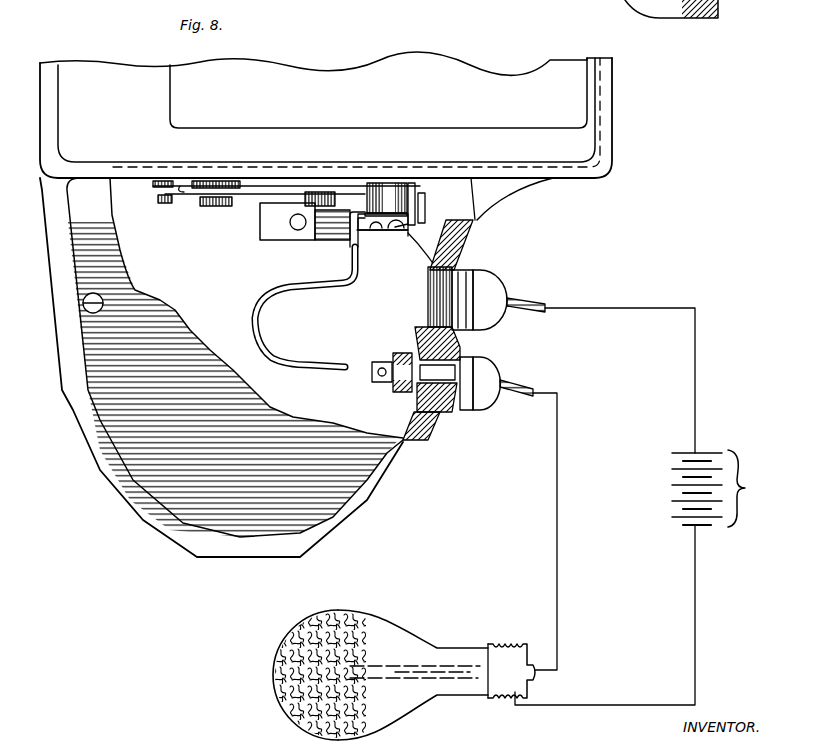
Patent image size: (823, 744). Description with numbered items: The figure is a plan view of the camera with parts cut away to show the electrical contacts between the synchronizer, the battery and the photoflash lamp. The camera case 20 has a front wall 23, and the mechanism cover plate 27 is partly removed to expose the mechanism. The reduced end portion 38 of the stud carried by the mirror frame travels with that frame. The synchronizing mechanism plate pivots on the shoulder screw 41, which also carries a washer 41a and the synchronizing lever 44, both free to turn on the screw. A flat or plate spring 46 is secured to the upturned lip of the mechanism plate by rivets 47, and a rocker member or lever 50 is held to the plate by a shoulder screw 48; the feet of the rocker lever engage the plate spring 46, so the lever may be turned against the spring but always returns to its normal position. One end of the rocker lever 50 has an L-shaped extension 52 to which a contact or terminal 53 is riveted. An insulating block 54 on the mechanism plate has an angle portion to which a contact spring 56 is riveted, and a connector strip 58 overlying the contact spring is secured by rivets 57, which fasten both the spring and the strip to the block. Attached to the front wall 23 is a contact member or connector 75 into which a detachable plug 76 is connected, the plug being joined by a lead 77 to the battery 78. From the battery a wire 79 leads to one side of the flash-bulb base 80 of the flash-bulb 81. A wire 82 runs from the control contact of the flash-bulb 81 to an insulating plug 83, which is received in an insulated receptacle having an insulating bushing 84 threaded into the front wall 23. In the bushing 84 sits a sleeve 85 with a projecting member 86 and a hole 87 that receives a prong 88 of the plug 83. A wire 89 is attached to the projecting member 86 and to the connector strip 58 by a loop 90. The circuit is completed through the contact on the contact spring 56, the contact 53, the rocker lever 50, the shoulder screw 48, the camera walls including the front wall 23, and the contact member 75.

The camera case 20 is at (577, 92).
The front wall 23 is at (463, 242).
The mechanism cover plate 27 is at (387, 453).
The reduced end portion 38 is at (167, 197).
The shoulder screw 41 is at (198, 203).
The washer 41a is at (180, 187).
The synchronizing lever 44 is at (248, 195).
The plate spring 46 is at (425, 190).
The rivets 47 is at (427, 205).
The shoulder screw 48 is at (388, 237).
The rocker member or lever 50 is at (307, 237).
The L-shaped extension 52 is at (262, 230).
The contact or terminal 53 is at (292, 226).
The insulating block 54 is at (438, 262).
The contact spring 56 is at (330, 232).
The rivets 57 is at (397, 228).
The connector strip 58 is at (404, 227).
The contact member or connector 75 is at (467, 268).
The detachable plug 76 is at (497, 288).
The conductor 77 is at (635, 308).
The battery 78 is at (720, 488).
The wire 79 is at (630, 703).
The flash-bulb base 80 is at (507, 656).
The flash-bulb 81 is at (362, 617).
The wire 82 is at (560, 447).
The insulating plug 83 is at (488, 373).
The insulating bushing 84 is at (458, 345).
The sleeve 85 is at (407, 355).
The projecting member 86 is at (386, 383).
The hole 87 is at (430, 413).
The prong 88 is at (453, 392).
The wire 89 is at (260, 318).
The loop 90 is at (356, 232).